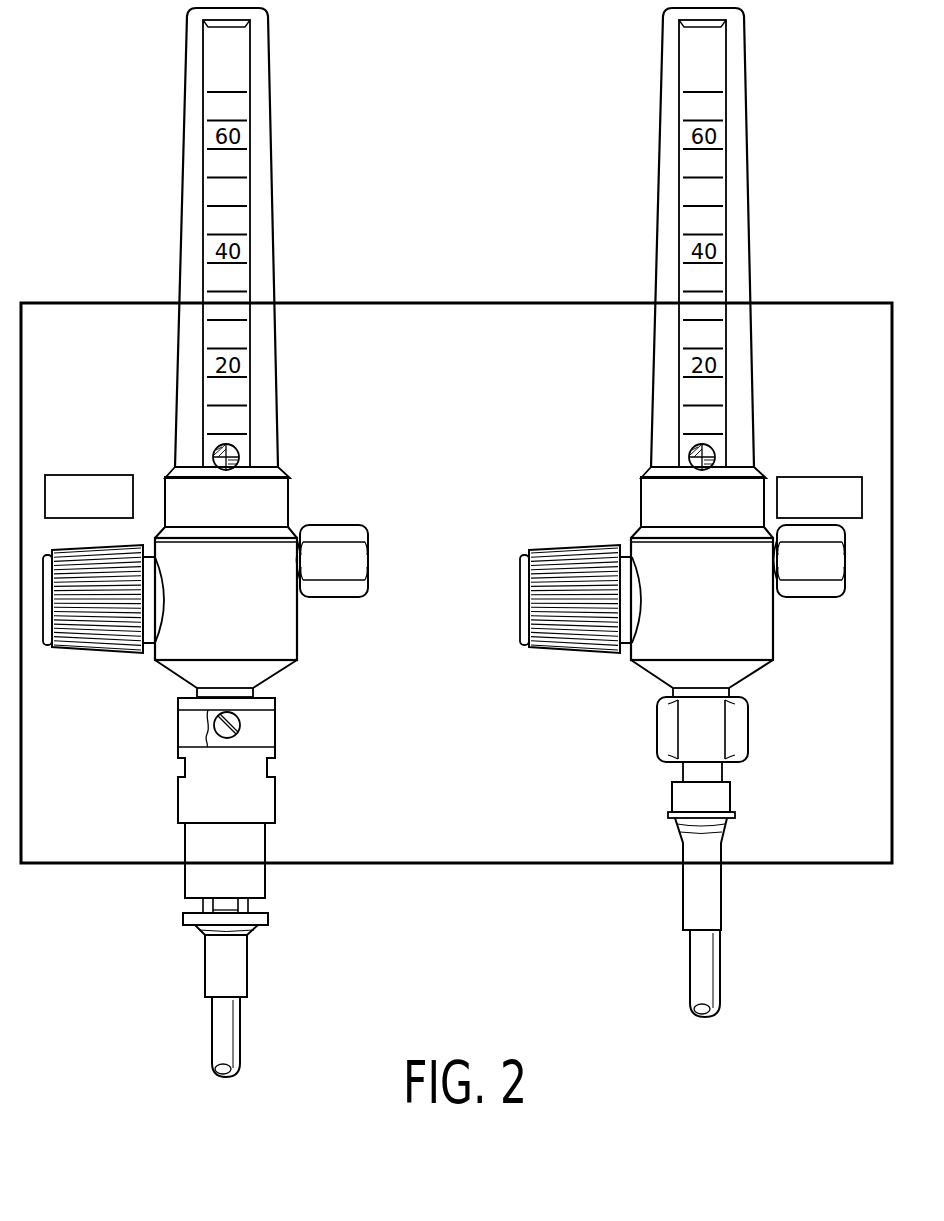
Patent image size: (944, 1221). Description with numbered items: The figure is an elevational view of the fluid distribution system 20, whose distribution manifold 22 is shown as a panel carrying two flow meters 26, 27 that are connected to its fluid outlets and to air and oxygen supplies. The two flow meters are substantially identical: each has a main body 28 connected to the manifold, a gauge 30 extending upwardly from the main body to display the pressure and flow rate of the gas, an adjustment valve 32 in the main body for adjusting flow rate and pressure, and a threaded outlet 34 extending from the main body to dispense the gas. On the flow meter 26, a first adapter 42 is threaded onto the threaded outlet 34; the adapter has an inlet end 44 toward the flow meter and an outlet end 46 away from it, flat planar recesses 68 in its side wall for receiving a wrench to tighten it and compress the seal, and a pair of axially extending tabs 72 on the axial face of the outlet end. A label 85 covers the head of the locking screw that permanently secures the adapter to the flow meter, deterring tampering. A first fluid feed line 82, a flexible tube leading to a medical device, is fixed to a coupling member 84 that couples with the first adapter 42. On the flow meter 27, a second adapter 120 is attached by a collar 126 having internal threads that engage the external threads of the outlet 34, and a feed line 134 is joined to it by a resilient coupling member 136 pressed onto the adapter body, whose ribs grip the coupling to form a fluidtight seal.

The fluid distribution system 20 is at (460, 240).
The distribution manifold 22 is at (530, 330).
The flow meter 26 is at (290, 475).
The flow meter 27 is at (640, 476).
The main body 28 is at (297, 628).
The gauge 30 is at (270, 208).
The adjustment valve 32 is at (88, 650).
The threaded outlet 34 is at (258, 692).
The first adapter 42 is at (278, 727).
The inlet end 44 is at (275, 701).
The outlet end 46 is at (248, 903).
The flat planar recesses 68 is at (185, 768).
The axially extending tabs 72 is at (228, 904).
The first fluid feed line 82 is at (212, 1030).
The coupling member 84 is at (250, 963).
The label 85 is at (180, 752).
The second adapter 120 is at (656, 740).
The collar 126 is at (748, 733).
The feed line 134 is at (689, 968).
The coupling member 136 is at (728, 845).